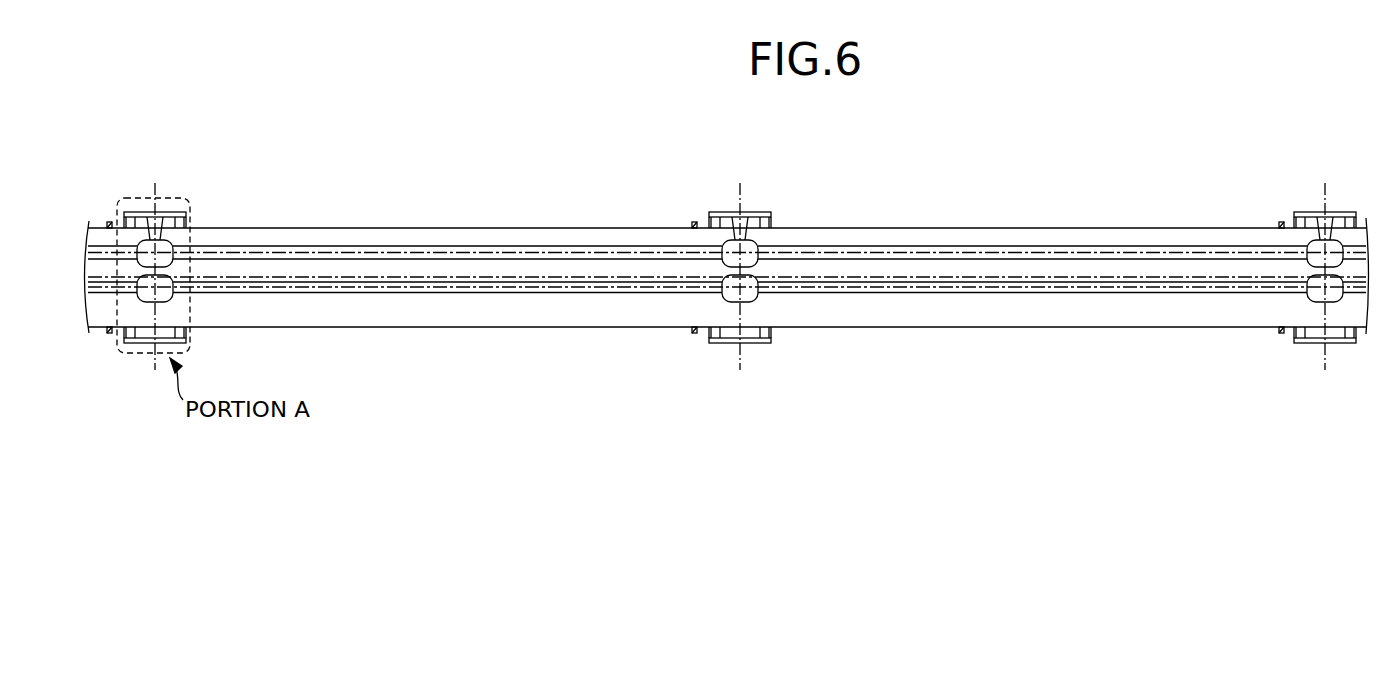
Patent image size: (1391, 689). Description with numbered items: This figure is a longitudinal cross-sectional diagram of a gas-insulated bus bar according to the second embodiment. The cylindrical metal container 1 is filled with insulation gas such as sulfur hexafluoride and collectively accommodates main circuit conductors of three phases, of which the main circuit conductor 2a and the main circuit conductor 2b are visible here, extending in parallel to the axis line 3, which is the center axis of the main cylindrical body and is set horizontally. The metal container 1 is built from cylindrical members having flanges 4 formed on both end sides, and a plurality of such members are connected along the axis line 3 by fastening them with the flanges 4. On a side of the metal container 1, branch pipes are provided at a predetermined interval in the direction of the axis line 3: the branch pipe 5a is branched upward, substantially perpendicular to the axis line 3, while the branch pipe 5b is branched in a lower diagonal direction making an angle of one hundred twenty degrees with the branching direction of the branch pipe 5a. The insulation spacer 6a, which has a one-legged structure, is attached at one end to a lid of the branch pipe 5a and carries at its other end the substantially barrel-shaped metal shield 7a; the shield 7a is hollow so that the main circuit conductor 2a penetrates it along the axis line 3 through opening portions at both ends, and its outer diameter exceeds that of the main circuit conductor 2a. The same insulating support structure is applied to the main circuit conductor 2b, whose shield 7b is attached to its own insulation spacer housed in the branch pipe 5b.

The metal container 1 is at (337, 227).
The main circuit conductor 2a is at (428, 252).
The main circuit conductor 2b is at (427, 293).
The axis line 3 is at (593, 277).
The flange 4 is at (109, 222).
The branch pipe 5a is at (181, 226).
The branch pipe 5b is at (182, 333).
The insulation spacer 6a is at (160, 227).
The shield 7a is at (164, 246).
The shield 7b is at (165, 296).